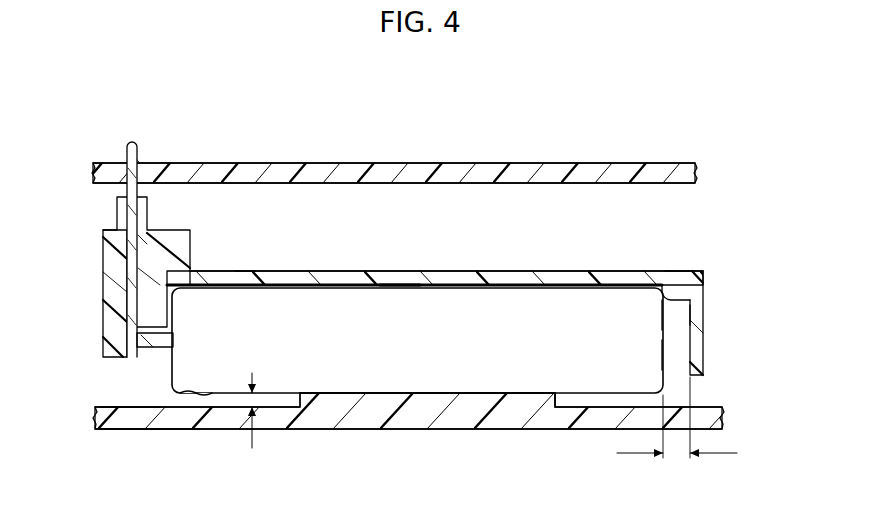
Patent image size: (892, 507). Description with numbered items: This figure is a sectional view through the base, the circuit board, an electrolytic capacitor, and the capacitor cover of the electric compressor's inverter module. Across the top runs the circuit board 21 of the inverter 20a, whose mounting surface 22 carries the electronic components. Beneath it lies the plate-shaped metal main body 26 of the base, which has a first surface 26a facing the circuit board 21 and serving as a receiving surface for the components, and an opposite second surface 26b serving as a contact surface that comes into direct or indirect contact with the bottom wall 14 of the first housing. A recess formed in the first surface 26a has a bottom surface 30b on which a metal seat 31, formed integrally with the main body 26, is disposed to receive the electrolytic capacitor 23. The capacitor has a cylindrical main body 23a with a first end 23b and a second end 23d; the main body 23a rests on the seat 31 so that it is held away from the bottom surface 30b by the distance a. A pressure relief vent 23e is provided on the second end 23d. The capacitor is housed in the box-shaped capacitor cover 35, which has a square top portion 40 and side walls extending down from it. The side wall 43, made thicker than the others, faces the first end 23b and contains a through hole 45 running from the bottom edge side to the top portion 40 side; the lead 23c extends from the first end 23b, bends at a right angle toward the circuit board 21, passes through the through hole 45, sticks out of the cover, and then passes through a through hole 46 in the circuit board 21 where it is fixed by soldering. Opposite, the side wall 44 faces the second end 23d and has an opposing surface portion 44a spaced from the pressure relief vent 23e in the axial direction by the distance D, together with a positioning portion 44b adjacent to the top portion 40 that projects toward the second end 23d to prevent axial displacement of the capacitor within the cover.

The bottom wall 14 is at (164, 429).
The inverter 20a is at (700, 188).
The circuit board 21 is at (679, 142).
The mounting surface 22 is at (603, 162).
The electrolytic capacitor 23 is at (457, 285).
The main body 23a is at (397, 302).
The first end 23b is at (170, 352).
The lead 23c is at (140, 160).
The second end 23d is at (667, 353).
The pressure relief vent 23e is at (665, 332).
The main body 26 is at (210, 429).
The first surface 26a is at (132, 406).
The second surface 26b is at (134, 431).
The bottom surface 30b is at (585, 404).
The seat 31 is at (483, 400).
The capacitor cover 35 is at (243, 268).
The top portion 40 is at (330, 272).
The side wall 43 is at (103, 278).
The side wall 44 is at (707, 285).
The opposing surface portion 44a is at (680, 312).
The positioning portion 44b is at (674, 283).
The through hole 45 is at (118, 215).
The through hole 46 is at (128, 156).
The distance a is at (244, 412).
The distance D is at (677, 417).